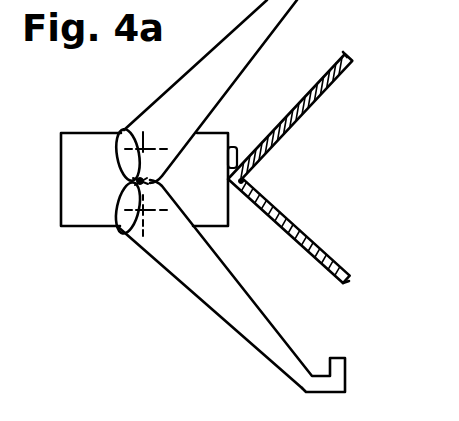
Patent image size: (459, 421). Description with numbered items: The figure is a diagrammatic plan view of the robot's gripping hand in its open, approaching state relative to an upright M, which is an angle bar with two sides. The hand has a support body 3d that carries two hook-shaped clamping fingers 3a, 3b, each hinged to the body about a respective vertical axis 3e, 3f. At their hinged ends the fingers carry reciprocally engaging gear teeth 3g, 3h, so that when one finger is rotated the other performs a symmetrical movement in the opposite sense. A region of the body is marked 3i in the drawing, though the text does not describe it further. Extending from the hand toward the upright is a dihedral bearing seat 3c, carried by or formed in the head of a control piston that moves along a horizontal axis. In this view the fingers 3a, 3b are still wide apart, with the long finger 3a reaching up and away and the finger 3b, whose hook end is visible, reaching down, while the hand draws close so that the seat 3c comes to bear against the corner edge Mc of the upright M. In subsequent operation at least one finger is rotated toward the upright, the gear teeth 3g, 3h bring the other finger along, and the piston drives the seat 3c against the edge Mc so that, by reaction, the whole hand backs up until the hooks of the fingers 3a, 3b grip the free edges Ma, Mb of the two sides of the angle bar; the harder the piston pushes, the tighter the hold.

The clamping finger 3a is at (207, 66).
The clamping finger 3b is at (189, 267).
The dihedral bearing seat 3c is at (237, 150).
The support body 3d is at (87, 180).
The vertical axis 3e is at (145, 148).
The vertical axis 3f is at (150, 213).
The gear teeth 3g is at (130, 137).
The gear teeth 3h is at (124, 231).
The block portion 3i is at (212, 190).
The upright M is at (304, 232).
The free edge Ma is at (346, 55).
The free edge Mb is at (350, 282).
The corner edge Mc is at (242, 183).